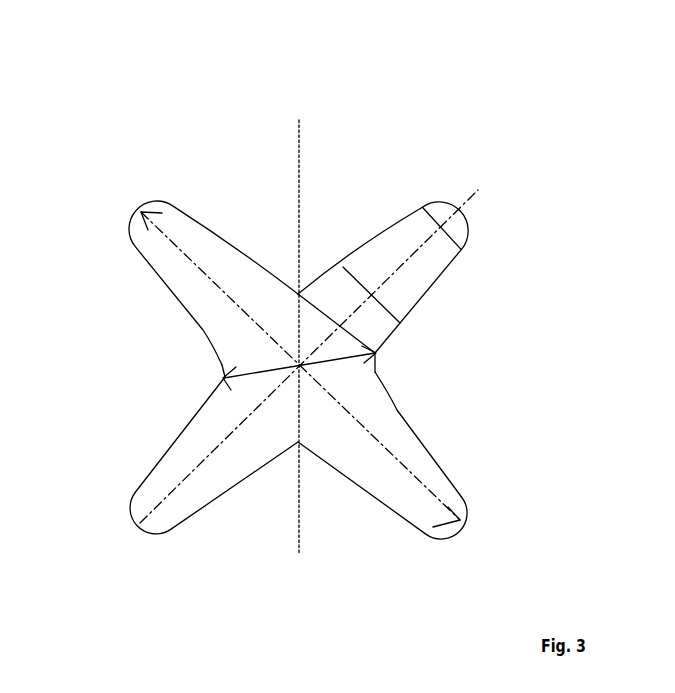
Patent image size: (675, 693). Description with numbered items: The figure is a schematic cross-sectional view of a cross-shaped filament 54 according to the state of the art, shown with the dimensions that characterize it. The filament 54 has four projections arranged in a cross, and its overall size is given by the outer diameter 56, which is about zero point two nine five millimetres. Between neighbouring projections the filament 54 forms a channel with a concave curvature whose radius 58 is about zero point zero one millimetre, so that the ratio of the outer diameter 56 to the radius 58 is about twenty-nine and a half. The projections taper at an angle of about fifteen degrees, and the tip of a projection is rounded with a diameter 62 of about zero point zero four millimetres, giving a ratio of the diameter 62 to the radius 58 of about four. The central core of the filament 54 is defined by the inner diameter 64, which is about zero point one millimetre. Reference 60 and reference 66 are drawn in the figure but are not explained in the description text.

The cross-shaped filament 54 is at (220, 136).
The outer diameter 56 is at (412, 484).
The radius of the concave curvature of the channel 58 is at (336, 322).
The rounded arm end 60 is at (437, 203).
The diameter of the curvature of the projection 62 is at (373, 295).
The inner diameter 64 is at (257, 371).
The third arm section 66 is at (434, 231).